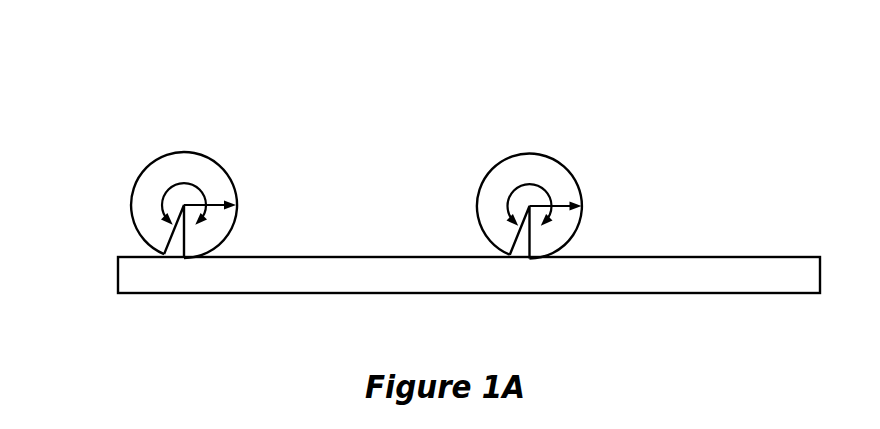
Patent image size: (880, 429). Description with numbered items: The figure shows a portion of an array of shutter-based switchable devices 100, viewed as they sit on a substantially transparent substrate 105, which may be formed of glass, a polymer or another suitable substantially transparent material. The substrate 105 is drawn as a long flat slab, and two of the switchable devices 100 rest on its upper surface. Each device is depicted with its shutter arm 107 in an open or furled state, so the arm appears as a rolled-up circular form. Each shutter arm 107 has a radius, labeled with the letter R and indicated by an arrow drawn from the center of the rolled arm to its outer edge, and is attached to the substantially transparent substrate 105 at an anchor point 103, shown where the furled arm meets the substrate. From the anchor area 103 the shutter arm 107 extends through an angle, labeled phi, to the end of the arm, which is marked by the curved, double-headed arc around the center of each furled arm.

The switchable devices 100 is at (118, 78).
The anchor point 103 is at (184, 215).
The substantially transparent substrate 105 is at (128, 288).
The shutter arm 107 is at (540, 153).